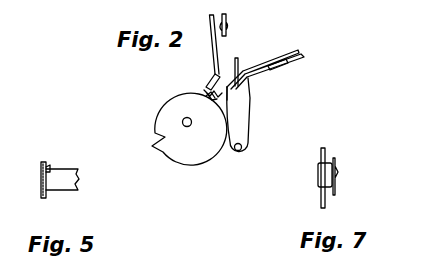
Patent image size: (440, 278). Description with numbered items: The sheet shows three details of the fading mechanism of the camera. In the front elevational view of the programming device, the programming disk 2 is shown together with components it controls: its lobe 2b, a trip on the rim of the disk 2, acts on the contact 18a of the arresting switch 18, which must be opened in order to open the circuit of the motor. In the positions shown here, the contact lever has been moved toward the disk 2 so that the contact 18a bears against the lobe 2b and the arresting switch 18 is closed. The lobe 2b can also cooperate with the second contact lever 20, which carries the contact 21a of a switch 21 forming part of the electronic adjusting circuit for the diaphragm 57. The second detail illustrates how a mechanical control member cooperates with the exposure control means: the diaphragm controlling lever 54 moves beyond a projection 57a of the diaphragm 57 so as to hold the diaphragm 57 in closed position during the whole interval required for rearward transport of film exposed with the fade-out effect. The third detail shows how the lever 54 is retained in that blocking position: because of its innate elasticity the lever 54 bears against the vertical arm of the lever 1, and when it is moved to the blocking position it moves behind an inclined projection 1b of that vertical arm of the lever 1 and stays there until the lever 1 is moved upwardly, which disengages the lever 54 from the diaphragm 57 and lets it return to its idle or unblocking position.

In FIG. 2, the programming disk 2 is at (168, 116).
In FIG. 2, the lobe 2b is at (206, 89).
In FIG. 2, the switch 21 is at (227, 36).
In FIG. 2, the contact 21a is at (212, 78).
In FIG. 2, the arresting switch 18 is at (288, 67).
In FIG. 2, the contact 18a is at (219, 91).
In FIG. 2, the second contact lever 20 is at (243, 129).
In FIG. 5, the diaphragm 57 is at (43, 193).
In FIG. 5, the projection 57a is at (48, 167).
In FIG. 5, the diaphragm controlling lever 54 is at (70, 190).
In FIG. 7, the diaphragm controlling lever 54 is at (336, 187).
In FIG. 7, the lever 1 is at (323, 151).
In FIG. 7, the inclined projection 1b is at (328, 175).